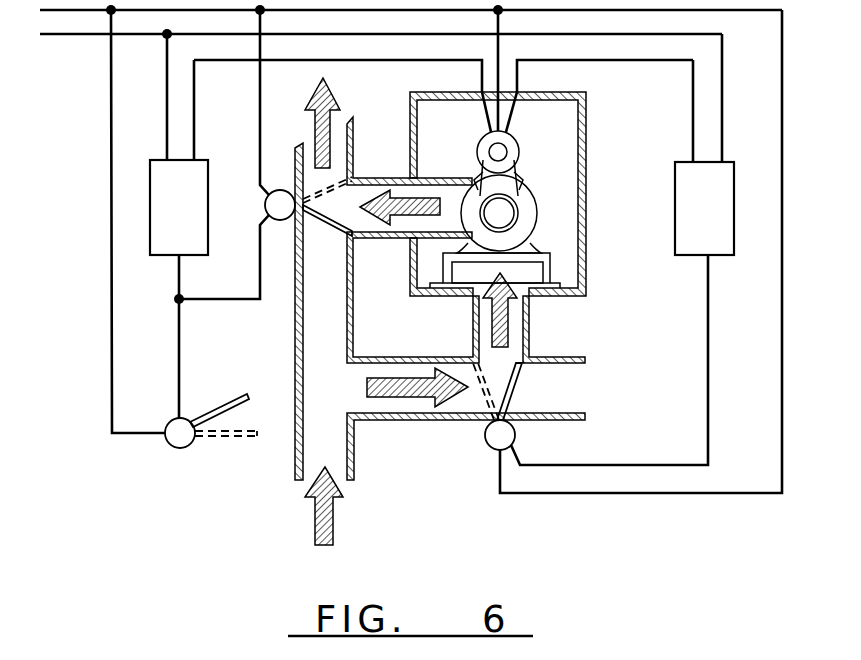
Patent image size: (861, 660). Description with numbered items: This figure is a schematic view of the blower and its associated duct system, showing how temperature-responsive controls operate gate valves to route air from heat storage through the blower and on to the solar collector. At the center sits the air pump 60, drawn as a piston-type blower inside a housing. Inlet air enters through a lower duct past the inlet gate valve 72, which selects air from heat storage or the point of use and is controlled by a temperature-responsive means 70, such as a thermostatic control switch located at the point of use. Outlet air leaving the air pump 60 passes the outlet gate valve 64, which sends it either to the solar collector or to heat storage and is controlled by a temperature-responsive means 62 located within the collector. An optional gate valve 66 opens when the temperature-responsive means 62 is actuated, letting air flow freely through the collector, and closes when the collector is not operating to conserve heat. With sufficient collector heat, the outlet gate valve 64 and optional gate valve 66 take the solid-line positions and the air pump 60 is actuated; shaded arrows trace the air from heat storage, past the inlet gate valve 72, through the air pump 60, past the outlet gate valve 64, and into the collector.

The air pump 60 is at (538, 203).
The temperature-responsive means 62 is at (173, 213).
The outlet gate valve 64 is at (280, 205).
The optional gate valve 66 is at (184, 440).
The temperature-responsive means 70 is at (698, 200).
The inlet gate valve 72 is at (500, 435).